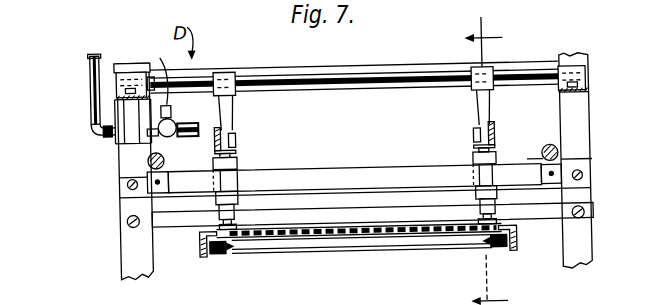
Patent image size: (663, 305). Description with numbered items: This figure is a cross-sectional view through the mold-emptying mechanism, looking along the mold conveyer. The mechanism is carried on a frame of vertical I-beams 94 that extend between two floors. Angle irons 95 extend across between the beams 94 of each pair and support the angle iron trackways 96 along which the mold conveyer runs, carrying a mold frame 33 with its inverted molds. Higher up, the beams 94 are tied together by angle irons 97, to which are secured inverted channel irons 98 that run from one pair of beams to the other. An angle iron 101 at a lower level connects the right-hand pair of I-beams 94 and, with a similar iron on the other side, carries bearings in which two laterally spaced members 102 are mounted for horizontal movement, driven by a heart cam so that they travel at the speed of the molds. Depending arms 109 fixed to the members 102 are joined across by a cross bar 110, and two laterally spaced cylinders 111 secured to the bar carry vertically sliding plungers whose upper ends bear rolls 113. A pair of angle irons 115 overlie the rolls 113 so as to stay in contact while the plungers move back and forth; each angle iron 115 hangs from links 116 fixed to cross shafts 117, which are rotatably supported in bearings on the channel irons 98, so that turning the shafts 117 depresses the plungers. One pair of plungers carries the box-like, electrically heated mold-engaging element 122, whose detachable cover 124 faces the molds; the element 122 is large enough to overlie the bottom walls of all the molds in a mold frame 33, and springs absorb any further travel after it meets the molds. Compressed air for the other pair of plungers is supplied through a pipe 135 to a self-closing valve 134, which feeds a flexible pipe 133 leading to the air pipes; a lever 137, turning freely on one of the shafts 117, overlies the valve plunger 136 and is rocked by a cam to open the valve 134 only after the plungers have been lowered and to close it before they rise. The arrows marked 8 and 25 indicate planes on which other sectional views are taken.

The section line 8 is at (484, 49).
The section line 25 is at (492, 261).
The mold frame 33 is at (358, 247).
The vertical I-beams 94 is at (126, 252).
The angle irons 95 is at (172, 216).
The angle iron trackways 96 is at (211, 252).
The angle irons 97 is at (525, 67).
The inverted channel irons 98 is at (116, 92).
The angle iron 101 is at (120, 181).
The laterally-spaced members 102 is at (118, 157).
The depending arms 109 is at (166, 157).
The cross bar 110 is at (354, 180).
The cylinders 111 is at (237, 159).
The rolls 113 is at (233, 170).
The angle irons 115 is at (237, 145).
The links 116 is at (230, 116).
The cross shafts 117 is at (337, 90).
The mold-engaging element 122 is at (320, 243).
The cover 124 is at (343, 218).
The flexible pipe 133 is at (180, 123).
The valve 134 is at (177, 110).
The pipe 135 is at (91, 55).
The valve plunger 136 is at (155, 73).
The lever 137 is at (202, 67).